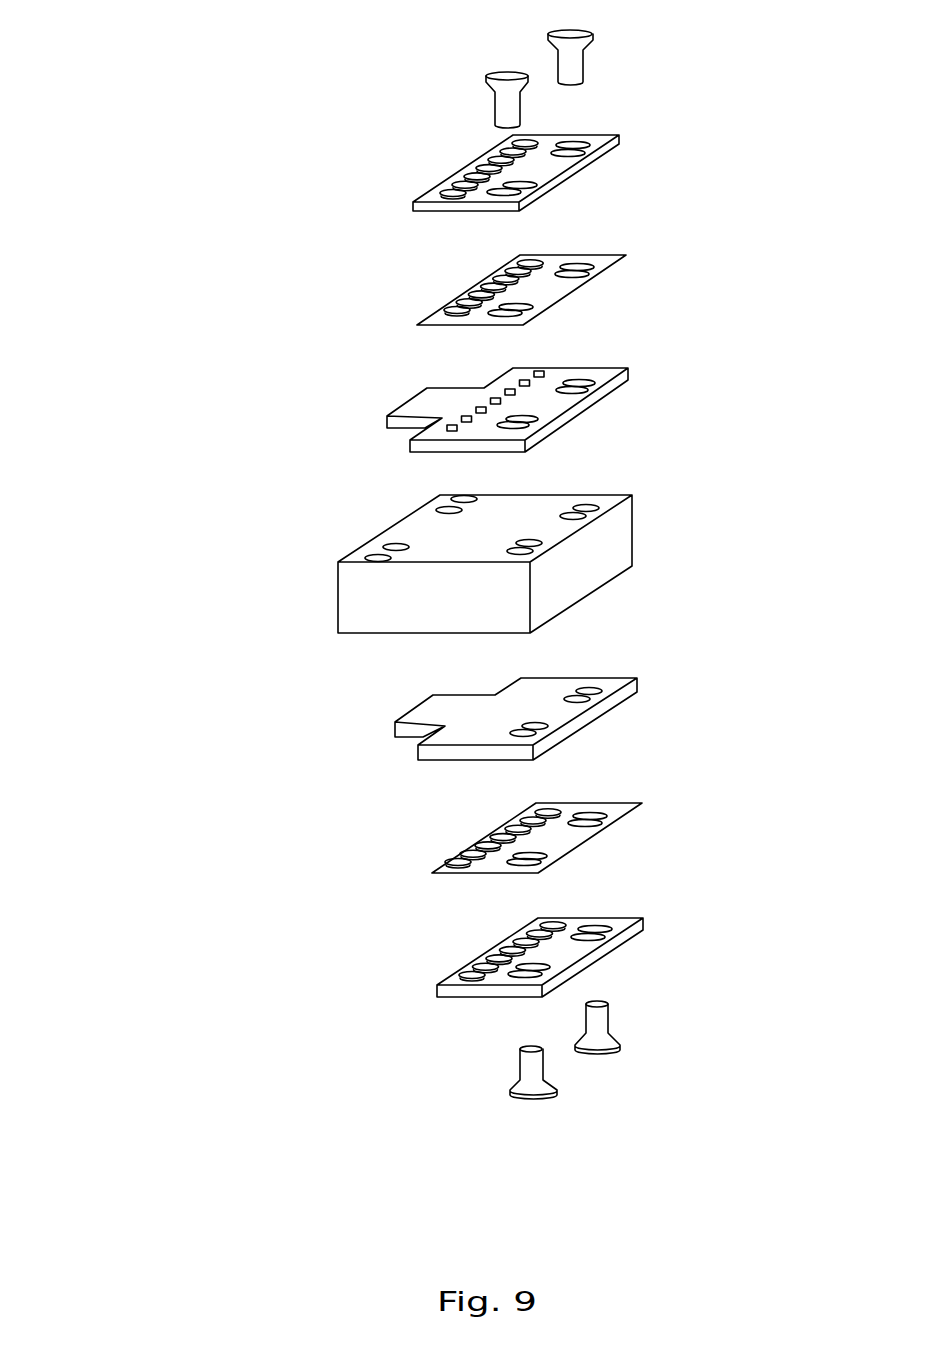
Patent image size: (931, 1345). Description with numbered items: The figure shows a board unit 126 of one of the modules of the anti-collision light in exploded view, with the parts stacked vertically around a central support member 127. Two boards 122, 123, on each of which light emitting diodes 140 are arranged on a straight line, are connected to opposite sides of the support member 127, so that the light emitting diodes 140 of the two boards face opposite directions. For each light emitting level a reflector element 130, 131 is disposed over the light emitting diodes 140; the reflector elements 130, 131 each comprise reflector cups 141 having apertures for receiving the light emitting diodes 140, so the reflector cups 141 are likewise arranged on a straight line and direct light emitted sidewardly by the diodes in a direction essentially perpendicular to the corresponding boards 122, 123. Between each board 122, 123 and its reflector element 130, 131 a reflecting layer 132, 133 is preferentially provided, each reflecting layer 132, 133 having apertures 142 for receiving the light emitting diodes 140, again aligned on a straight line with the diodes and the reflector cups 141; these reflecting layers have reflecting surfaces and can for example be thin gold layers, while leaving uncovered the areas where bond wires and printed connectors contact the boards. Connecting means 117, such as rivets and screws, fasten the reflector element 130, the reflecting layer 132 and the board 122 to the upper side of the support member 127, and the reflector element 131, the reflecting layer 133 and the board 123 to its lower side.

The board unit 126 is at (200, 100).
The connecting means 117 is at (587, 55).
The reflector element 130 is at (620, 135).
The reflector cups 141 is at (457, 185).
The apertures 142 is at (463, 303).
The reflecting layer 132 is at (623, 255).
The light emitting diodes 140 is at (483, 412).
The board 122 is at (563, 404).
The support member 127 is at (632, 530).
The board 123 is at (633, 678).
The reflecting layer 133 is at (635, 803).
The reflector element 131 is at (642, 918).